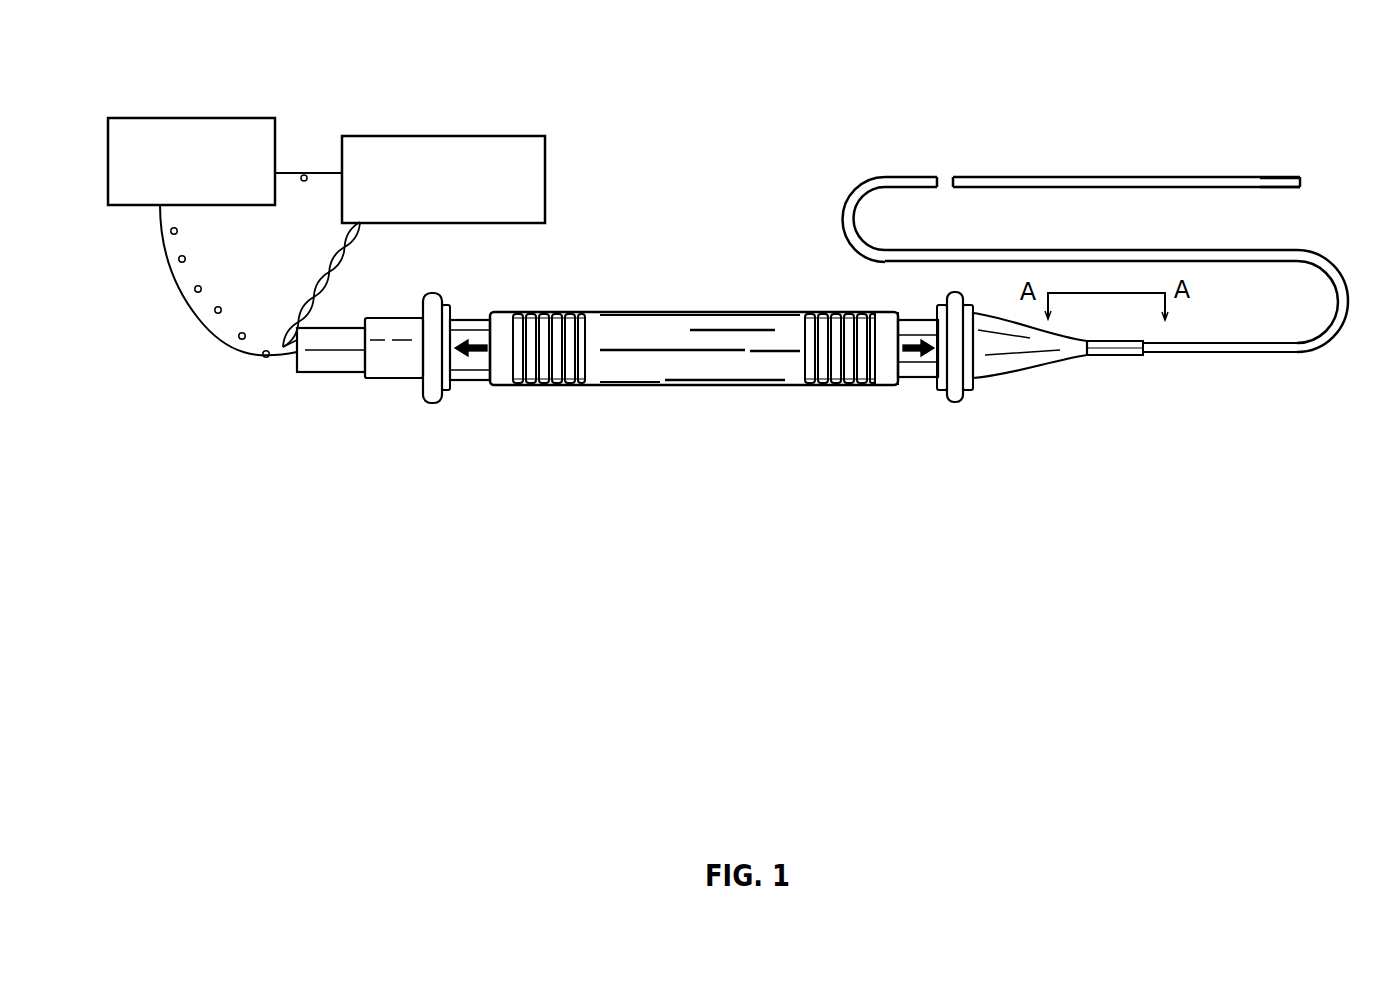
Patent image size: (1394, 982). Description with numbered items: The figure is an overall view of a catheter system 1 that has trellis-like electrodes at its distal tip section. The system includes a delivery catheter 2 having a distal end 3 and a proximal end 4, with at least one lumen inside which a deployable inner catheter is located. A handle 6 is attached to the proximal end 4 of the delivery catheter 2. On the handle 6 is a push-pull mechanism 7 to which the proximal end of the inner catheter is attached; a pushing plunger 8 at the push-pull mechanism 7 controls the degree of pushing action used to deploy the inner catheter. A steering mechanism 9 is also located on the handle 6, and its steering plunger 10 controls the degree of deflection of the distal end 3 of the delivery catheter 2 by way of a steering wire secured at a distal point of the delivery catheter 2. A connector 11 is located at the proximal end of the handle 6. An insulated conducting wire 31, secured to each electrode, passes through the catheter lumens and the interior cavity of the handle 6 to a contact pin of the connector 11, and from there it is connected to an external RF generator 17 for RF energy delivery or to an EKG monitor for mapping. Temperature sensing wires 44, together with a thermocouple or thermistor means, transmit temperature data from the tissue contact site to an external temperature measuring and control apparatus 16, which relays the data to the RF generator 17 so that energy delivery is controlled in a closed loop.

The catheter system 1 is at (765, 133).
The delivery catheter 2 is at (1053, 175).
The distal end 3 is at (1298, 172).
The proximal end 4 is at (1085, 360).
The handle 6 is at (650, 392).
The push-pull mechanism 7 is at (912, 392).
The pushing plunger 8 is at (955, 408).
The steering mechanism 9 is at (480, 387).
The steering plunger 10 is at (428, 405).
The connector 11 is at (340, 380).
The temperature measuring and control apparatus 16 is at (524, 147).
The RF generator 17 is at (258, 131).
The insulated conducting wire 31 is at (201, 308).
The temperature sensing wires 44 is at (327, 273).